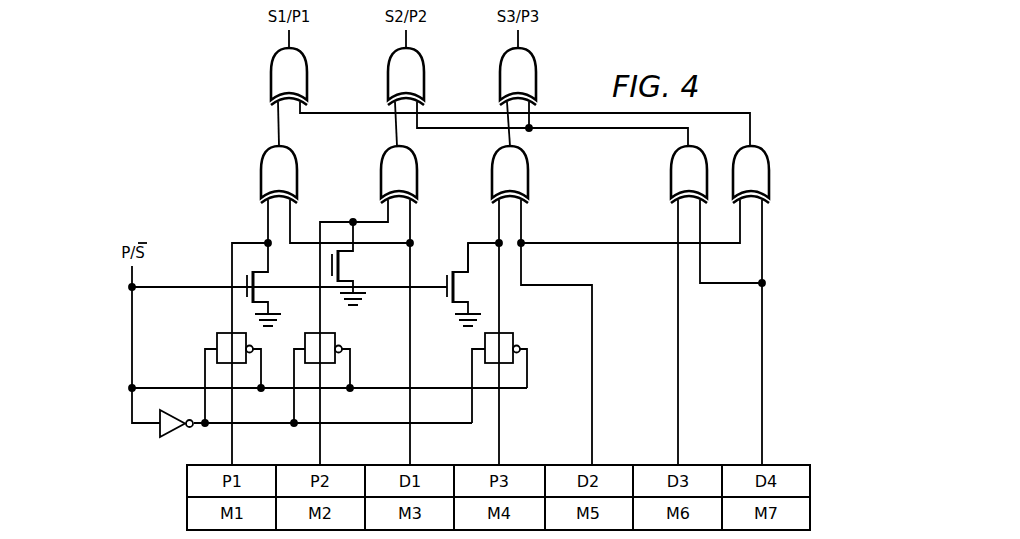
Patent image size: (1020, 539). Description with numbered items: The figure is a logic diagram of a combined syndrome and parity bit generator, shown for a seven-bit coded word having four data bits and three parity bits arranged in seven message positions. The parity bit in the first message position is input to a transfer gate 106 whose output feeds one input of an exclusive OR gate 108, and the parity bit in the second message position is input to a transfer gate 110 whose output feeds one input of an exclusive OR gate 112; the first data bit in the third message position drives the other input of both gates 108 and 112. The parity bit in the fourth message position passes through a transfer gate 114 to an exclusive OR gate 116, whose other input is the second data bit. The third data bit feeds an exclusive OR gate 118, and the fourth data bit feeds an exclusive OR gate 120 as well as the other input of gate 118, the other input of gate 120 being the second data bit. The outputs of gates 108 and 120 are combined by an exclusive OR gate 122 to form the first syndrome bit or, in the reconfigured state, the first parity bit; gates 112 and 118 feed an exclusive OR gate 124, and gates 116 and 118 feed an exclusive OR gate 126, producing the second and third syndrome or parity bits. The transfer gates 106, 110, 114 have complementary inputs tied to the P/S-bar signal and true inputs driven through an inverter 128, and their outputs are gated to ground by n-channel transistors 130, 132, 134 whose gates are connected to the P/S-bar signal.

The transfer gate 106 is at (215, 337).
The exclusive OR gate 108 is at (295, 166).
The transfer gate 110 is at (343, 338).
The exclusive OR gate 112 is at (412, 166).
The transfer gate 114 is at (518, 337).
The exclusive OR gate 116 is at (524, 166).
The exclusive OR gate 118 is at (672, 161).
The exclusive OR gate 120 is at (768, 165).
The exclusive OR gate 122 is at (306, 69).
The exclusive OR gate 124 is at (423, 69).
The exclusive OR gate 126 is at (535, 69).
The inverter 128 is at (168, 438).
The n-channel transistor 130 is at (262, 281).
The n-channel transistor 132 is at (347, 281).
The n-channel transistor 134 is at (455, 268).